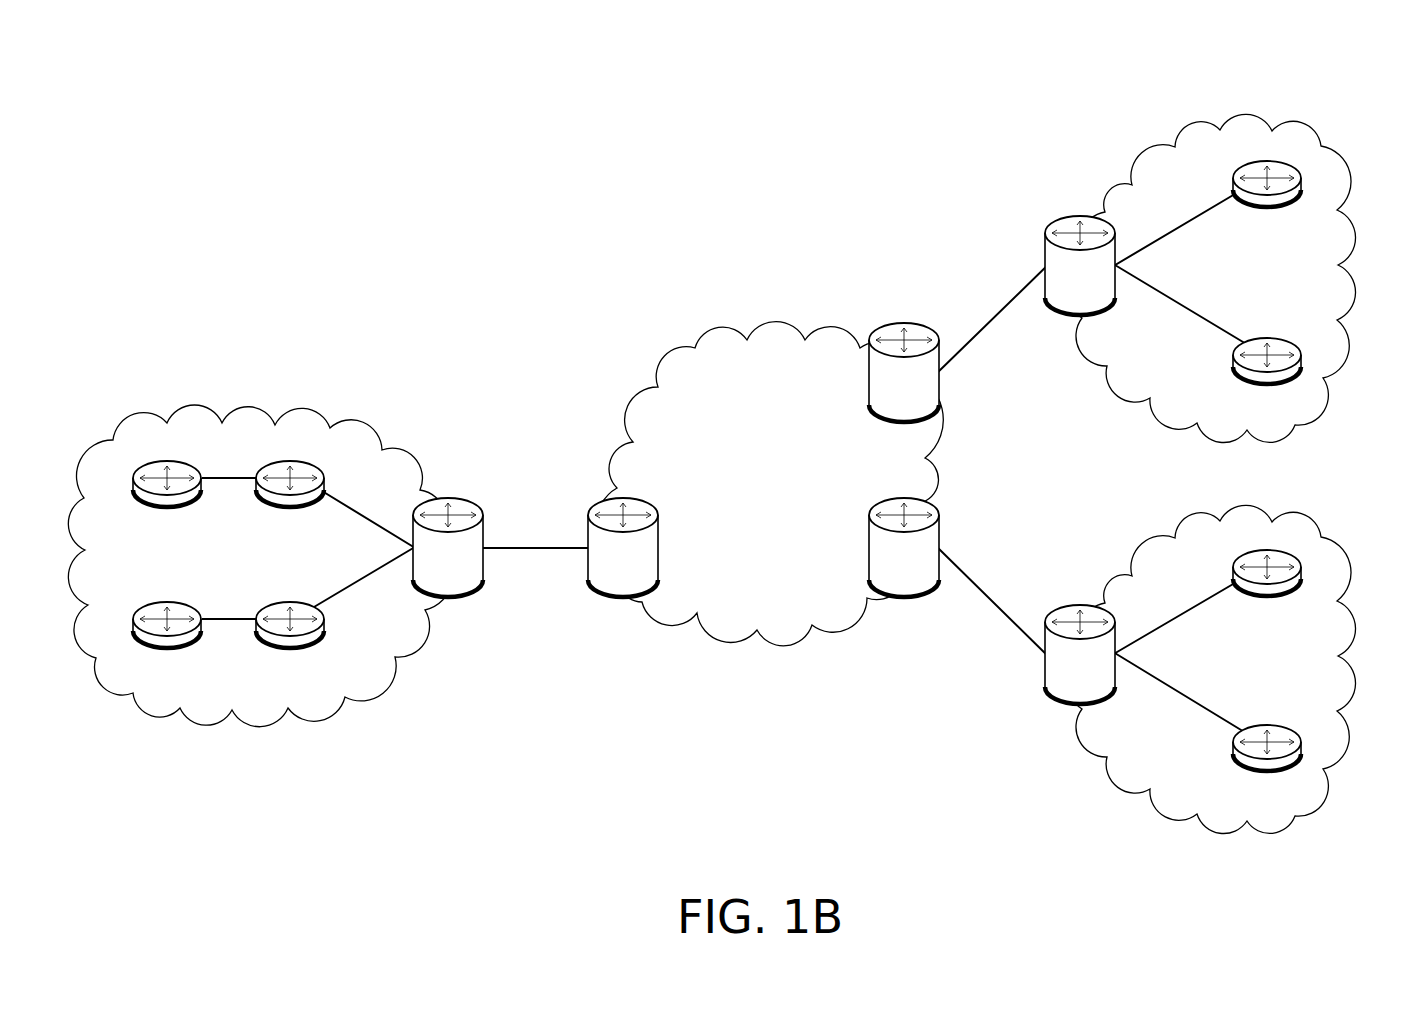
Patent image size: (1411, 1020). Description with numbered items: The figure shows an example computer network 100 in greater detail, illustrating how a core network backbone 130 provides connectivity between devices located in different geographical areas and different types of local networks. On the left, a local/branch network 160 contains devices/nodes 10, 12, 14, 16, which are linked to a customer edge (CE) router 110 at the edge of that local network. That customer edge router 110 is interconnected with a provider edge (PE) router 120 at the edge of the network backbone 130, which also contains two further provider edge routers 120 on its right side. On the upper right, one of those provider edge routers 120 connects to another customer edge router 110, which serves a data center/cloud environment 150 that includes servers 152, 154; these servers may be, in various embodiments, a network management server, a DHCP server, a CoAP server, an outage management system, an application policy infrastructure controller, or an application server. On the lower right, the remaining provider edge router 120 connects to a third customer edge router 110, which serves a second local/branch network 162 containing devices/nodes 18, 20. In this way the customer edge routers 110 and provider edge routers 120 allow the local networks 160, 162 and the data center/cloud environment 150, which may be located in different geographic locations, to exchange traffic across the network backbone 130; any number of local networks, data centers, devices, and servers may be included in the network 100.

The computer network 100 is at (1308, 65).
The device/node 10 is at (167, 499).
The device/node 12 is at (290, 499).
The device/node 14 is at (167, 640).
The device/node 16 is at (290, 640).
The device/node 18 is at (1267, 764).
The device/node 20 is at (1267, 589).
The customer edge (CE) router 110 is at (431, 585).
The provider edge (PE) router 120 is at (606, 585).
The network backbone 130 is at (751, 503).
The data center/cloud environment 150 is at (1177, 143).
The server 152 is at (1267, 199).
The server 154 is at (1267, 377).
The local/branch network 160 is at (306, 403).
The local/branch network 162 is at (1097, 753).